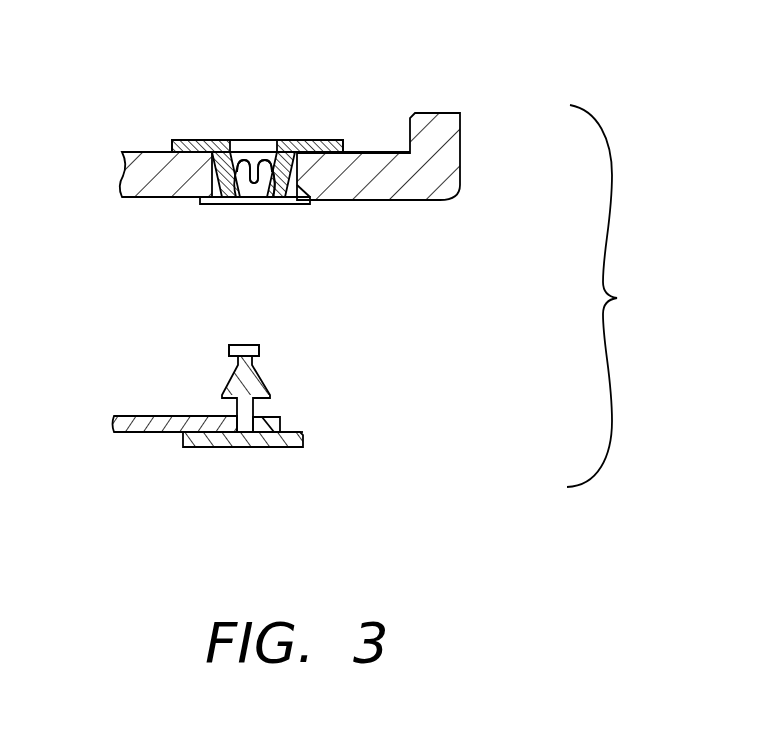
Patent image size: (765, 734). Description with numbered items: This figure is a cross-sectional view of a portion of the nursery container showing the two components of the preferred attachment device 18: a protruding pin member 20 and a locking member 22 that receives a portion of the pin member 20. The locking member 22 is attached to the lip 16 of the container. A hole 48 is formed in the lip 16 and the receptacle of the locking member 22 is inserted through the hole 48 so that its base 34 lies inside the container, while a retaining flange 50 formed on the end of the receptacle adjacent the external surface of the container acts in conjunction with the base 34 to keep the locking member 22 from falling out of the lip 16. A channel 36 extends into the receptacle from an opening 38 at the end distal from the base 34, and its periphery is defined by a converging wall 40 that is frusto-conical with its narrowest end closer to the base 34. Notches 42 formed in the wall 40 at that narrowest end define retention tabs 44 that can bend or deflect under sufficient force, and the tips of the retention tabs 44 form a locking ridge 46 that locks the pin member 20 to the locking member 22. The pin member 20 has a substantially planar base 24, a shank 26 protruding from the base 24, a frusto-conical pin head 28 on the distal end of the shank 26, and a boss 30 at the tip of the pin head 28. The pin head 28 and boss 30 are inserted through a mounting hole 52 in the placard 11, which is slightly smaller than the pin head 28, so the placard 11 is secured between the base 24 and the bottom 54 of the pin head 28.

The placard 11 is at (127, 433).
The lip 16 is at (435, 200).
The attachment device 18 is at (624, 296).
The pin member 20 is at (304, 441).
The locking member 22 is at (347, 146).
The base 24 is at (197, 447).
The shank 26 is at (235, 412).
The pin head 28 is at (262, 372).
The boss 30 is at (260, 350).
The base 34 is at (187, 140).
The channel 36 is at (245, 200).
The opening 38 is at (253, 203).
The converging wall 40 is at (268, 200).
The notches 42 is at (259, 158).
The retention tabs 44 is at (238, 160).
The locking ridge 46 is at (272, 160).
The hole 48 is at (312, 186).
The retaining flange 50 is at (210, 204).
The mounting hole 52 is at (230, 447).
The bottom of the pin head 54 is at (258, 398).